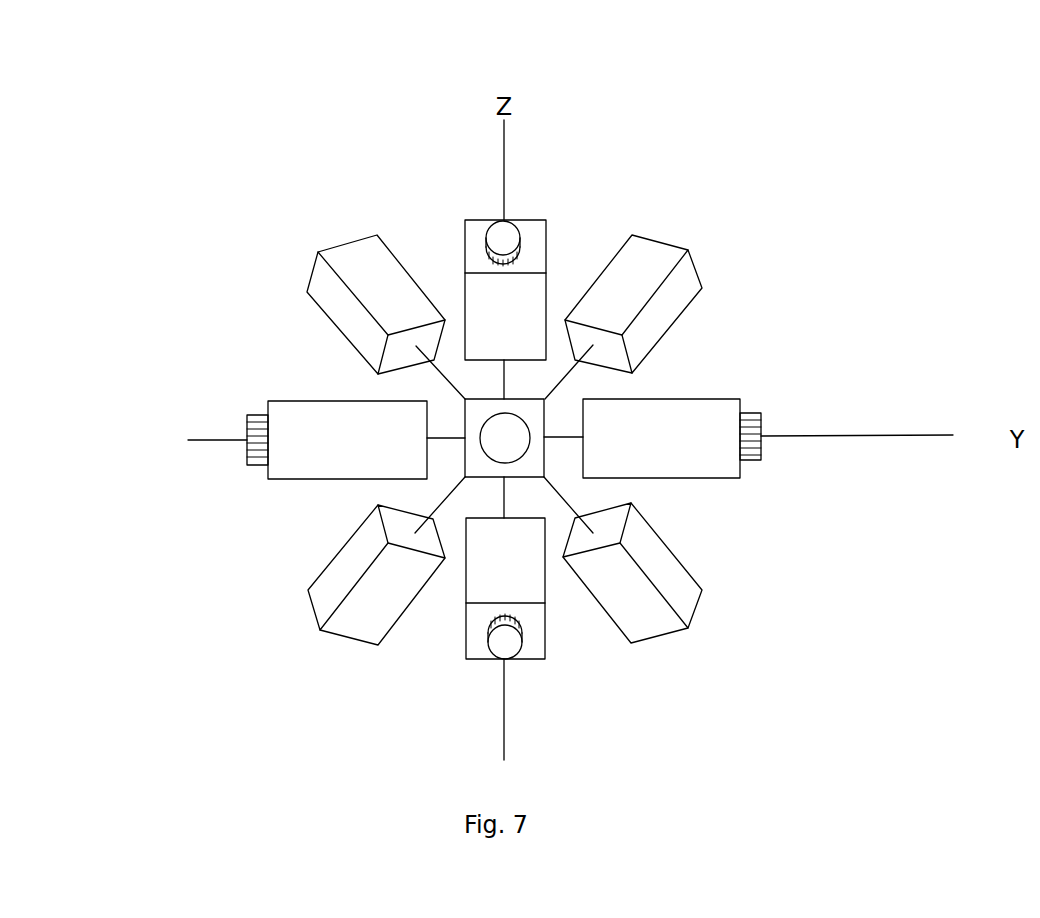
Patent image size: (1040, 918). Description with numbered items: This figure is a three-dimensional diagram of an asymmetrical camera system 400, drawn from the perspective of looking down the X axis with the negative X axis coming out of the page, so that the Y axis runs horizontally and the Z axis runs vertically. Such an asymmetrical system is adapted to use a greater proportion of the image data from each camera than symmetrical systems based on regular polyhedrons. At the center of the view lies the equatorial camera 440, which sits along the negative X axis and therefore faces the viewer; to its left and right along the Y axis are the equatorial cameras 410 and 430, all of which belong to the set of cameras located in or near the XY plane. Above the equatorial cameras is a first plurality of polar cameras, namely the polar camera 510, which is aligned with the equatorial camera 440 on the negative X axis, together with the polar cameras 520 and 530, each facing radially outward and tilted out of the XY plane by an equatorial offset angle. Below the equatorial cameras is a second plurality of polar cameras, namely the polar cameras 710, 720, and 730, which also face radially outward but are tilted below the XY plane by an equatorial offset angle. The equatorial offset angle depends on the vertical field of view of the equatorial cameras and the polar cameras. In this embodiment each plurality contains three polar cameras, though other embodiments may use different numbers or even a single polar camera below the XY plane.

The camera system 400 is at (563, 148).
The equatorial camera 410 is at (345, 453).
The equatorial camera 430 is at (620, 452).
The equatorial camera 440 is at (550, 407).
The polar camera 510 is at (483, 334).
The polar camera 520 is at (408, 304).
The polar camera 530 is at (601, 291).
The polar camera 710 is at (527, 570).
The polar camera 720 is at (366, 602).
The polar camera 730 is at (602, 601).